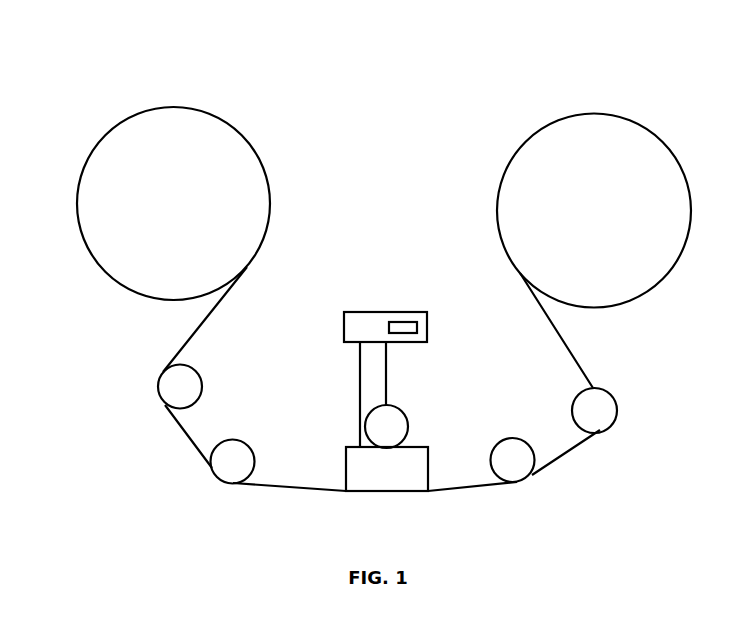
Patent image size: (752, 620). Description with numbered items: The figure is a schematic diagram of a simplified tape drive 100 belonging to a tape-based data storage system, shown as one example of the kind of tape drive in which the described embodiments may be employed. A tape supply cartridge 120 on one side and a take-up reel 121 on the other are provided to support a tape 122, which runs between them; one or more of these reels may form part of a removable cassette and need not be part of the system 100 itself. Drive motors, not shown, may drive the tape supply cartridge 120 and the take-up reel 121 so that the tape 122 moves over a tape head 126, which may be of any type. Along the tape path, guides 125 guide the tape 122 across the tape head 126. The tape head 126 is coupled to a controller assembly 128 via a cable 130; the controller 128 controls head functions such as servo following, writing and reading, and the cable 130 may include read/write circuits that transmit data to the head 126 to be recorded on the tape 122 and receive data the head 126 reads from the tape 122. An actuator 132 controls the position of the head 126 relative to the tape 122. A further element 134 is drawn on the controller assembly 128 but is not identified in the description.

The tape drive 100 is at (80, 110).
The tape supply cartridge 120 is at (173, 107).
The take-up reel 121 is at (593, 113).
The tape 122 is at (290, 490).
The guides 125 is at (203, 383).
The tape head 126 is at (430, 468).
The controller assembly 128 is at (383, 312).
The cable 130 is at (363, 423).
The actuator 132 is at (405, 407).
The head sensor 134 is at (412, 312).